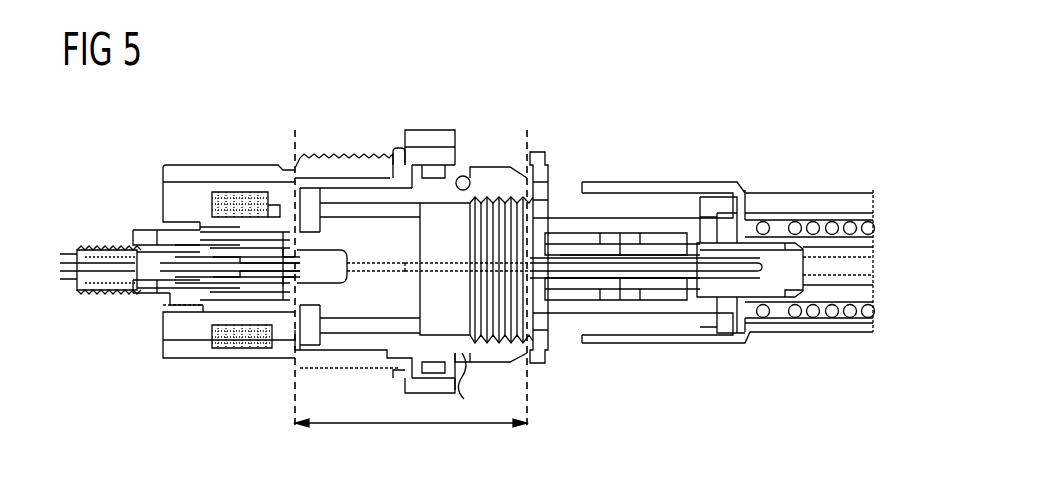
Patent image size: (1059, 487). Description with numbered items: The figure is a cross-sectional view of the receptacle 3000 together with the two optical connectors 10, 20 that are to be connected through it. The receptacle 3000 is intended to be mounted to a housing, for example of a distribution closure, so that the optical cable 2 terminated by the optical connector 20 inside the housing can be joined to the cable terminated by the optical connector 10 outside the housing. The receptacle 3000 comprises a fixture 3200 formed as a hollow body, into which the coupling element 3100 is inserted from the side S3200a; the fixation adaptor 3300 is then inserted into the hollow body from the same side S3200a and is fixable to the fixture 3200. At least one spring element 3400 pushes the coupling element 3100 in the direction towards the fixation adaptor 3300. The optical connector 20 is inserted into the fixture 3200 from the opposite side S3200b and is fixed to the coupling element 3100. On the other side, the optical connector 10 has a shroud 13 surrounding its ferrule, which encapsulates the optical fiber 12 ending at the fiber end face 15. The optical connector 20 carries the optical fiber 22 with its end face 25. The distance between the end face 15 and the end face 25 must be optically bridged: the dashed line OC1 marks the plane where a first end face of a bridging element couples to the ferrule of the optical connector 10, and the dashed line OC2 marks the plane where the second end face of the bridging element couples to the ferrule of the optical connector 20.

The optical cable 2 is at (72, 280).
The optical connector 20 is at (143, 232).
The coupling element 3100 is at (183, 317).
The spring element 3400 is at (243, 200).
The optical fiber 22 is at (214, 291).
The end face of the optical fiber 25 is at (291, 267).
The side of the fixture S3200b is at (158, 308).
The fixture 3200 is at (315, 141).
The receptacle 3000 is at (410, 112).
The fixation adaptor 3300 is at (490, 163).
The fiber end face 15 is at (520, 265).
The plane of second end face coupling OC2 is at (293, 408).
The plane of first end face coupling OC1 is at (527, 412).
The side of the fixture S3200a is at (411, 411).
The shroud 13 is at (553, 218).
The optical connector 10 is at (690, 170).
The optical fiber 12 is at (568, 272).